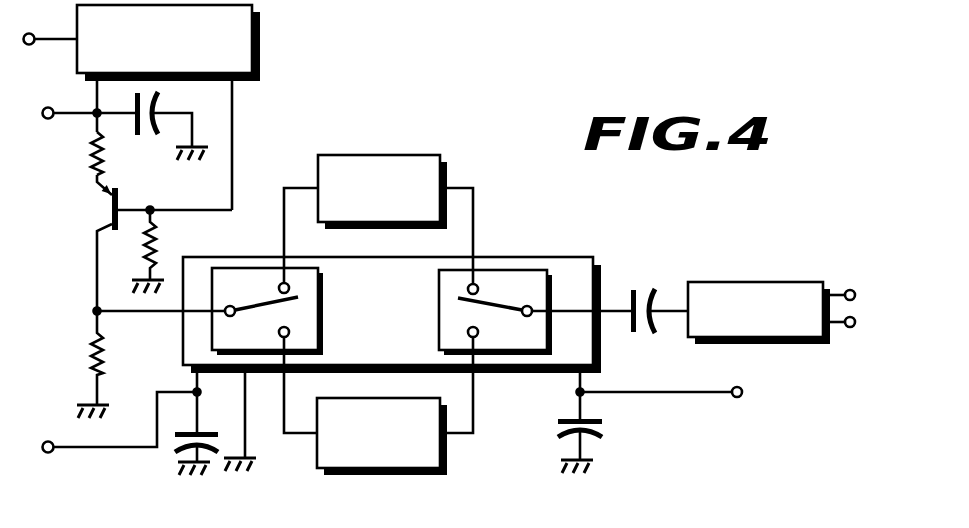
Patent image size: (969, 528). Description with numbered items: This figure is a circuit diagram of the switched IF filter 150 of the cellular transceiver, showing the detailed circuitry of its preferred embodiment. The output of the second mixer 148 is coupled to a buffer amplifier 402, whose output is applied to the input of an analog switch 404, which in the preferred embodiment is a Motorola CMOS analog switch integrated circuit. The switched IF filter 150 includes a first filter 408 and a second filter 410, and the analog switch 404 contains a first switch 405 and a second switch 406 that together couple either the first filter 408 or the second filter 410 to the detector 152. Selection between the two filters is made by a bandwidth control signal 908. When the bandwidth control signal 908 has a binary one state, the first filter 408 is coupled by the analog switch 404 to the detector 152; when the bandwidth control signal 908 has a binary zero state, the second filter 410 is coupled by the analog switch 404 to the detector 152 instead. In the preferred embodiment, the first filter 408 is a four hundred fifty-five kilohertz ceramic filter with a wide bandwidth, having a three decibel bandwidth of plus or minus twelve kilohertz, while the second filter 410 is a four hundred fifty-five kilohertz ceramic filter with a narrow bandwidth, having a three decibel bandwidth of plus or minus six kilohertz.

The second mixer 148 is at (260, 42).
The switched IF filter 150 is at (650, 209).
The detector 152 is at (758, 281).
The buffer amplifier 402 is at (105, 210).
The analog switch 404 is at (527, 253).
The first switch 405 is at (267, 311).
The second switch 406 is at (487, 305).
The first filter 408 is at (382, 153).
The second filter 410 is at (382, 475).
The bandwidth control signal 908 is at (668, 393).